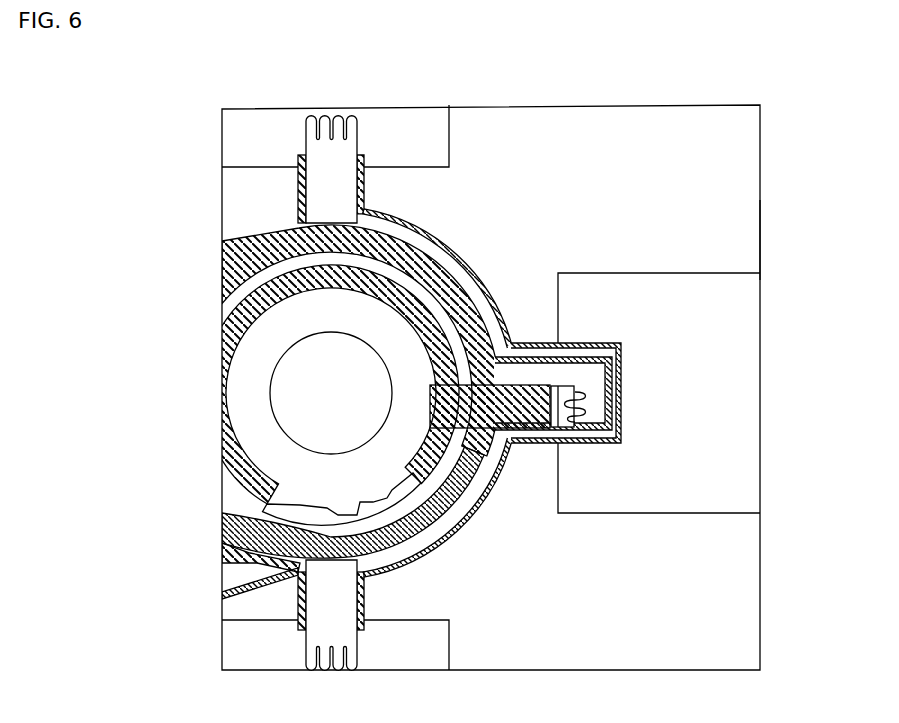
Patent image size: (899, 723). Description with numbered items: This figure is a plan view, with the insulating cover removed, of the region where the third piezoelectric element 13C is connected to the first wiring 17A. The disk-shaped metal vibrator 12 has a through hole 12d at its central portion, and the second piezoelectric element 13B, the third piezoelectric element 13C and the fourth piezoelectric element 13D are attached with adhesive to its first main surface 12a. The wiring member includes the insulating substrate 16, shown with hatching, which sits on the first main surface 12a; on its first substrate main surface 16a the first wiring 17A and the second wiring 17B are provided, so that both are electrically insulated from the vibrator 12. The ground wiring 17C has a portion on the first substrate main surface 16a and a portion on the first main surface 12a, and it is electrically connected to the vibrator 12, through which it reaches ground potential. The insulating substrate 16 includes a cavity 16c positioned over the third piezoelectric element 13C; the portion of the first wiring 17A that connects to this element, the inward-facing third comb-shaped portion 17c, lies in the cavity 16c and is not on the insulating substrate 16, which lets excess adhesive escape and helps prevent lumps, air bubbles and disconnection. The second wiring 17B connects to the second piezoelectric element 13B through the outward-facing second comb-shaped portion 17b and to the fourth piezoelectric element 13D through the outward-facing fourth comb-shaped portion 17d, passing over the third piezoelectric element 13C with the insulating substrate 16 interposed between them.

The vibrator 12 is at (761, 186).
The first main surface 12a is at (743, 234).
The through hole 12d is at (290, 367).
The second piezoelectric element 13B is at (243, 152).
The third piezoelectric element 13C is at (735, 306).
The fourth piezoelectric element 13D is at (243, 635).
The insulating substrate 16 is at (268, 225).
The first substrate main surface 16a is at (237, 472).
The cavity 16c is at (560, 414).
The first wiring 17A is at (277, 268).
The second wiring 17B is at (245, 546).
The ground wiring 17C is at (243, 503).
The second comb-shaped portion 17b is at (305, 122).
The third comb-shaped portion 17c is at (386, 393).
The fourth comb-shaped portion 17d is at (305, 663).